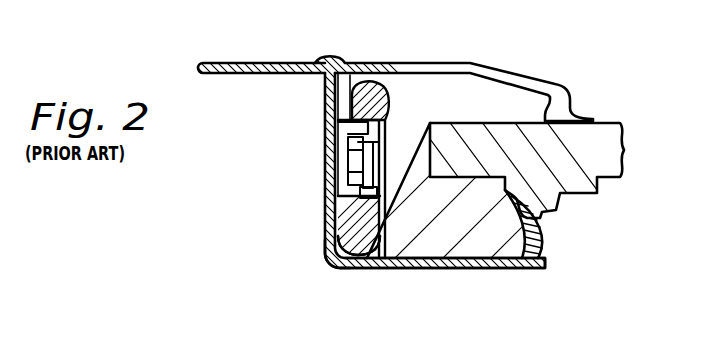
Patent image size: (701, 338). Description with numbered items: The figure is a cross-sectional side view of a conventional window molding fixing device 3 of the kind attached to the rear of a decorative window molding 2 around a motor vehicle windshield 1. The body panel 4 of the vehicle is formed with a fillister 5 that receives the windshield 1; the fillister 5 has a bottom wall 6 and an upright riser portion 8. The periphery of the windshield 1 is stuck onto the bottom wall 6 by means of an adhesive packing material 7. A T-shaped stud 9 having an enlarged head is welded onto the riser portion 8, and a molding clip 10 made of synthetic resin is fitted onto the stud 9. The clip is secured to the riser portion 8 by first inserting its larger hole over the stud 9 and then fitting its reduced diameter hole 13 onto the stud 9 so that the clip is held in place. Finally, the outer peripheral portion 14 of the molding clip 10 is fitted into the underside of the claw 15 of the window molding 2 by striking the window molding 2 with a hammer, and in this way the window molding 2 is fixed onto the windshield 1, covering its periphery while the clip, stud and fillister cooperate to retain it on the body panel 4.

The windshield 1 is at (606, 122).
The window molding 2 is at (470, 63).
The window molding fixing device 3 is at (396, 112).
The body panel 4 is at (240, 64).
The fillister 5 is at (334, 263).
The bottom wall 6 is at (443, 267).
The adhesive packing material 7 is at (480, 243).
The riser portion 8 is at (328, 217).
The T-shaped stud 9 is at (342, 162).
The molding clip 10 is at (330, 243).
The reduced diameter hole 13 is at (355, 171).
The outer peripheral portion 14 is at (327, 125).
The claw 15 is at (358, 118).